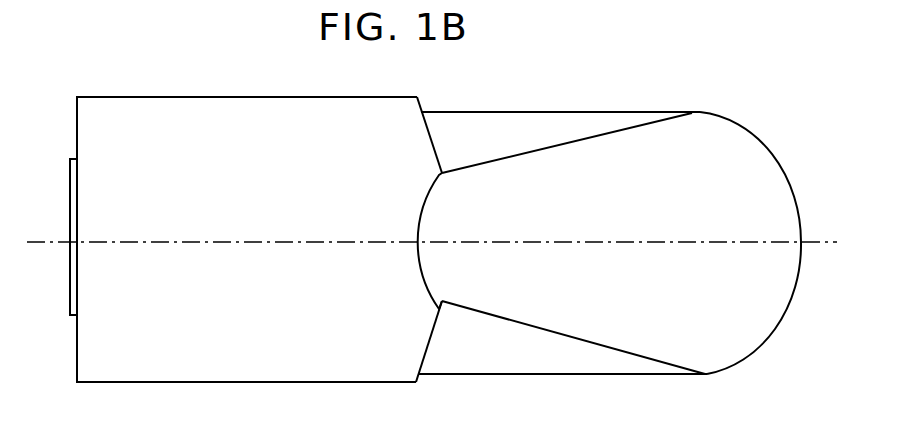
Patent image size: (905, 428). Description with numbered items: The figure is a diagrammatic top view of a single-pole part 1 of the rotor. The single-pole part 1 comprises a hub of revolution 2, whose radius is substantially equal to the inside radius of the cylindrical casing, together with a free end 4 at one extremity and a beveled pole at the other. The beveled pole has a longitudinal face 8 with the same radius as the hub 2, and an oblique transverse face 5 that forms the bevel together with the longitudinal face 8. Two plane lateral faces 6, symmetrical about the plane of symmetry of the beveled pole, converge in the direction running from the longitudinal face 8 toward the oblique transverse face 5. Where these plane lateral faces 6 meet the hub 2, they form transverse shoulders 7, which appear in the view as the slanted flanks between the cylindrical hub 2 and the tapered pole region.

The single-pole part 1 is at (432, 228).
The hub of revolution 2 is at (315, 110).
The free end 4 is at (88, 345).
The oblique transverse face 5 is at (736, 162).
The plane lateral faces 6 is at (497, 130).
The transverse shoulders 7 is at (430, 133).
The longitudinal face 8 is at (595, 375).